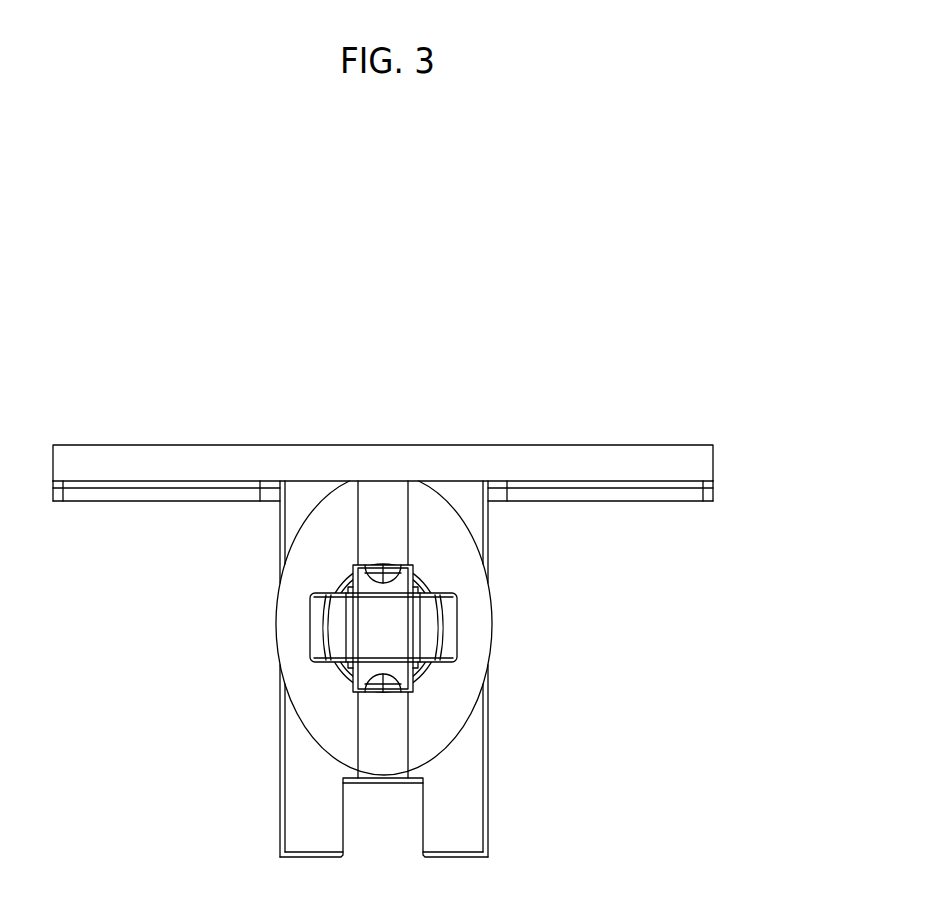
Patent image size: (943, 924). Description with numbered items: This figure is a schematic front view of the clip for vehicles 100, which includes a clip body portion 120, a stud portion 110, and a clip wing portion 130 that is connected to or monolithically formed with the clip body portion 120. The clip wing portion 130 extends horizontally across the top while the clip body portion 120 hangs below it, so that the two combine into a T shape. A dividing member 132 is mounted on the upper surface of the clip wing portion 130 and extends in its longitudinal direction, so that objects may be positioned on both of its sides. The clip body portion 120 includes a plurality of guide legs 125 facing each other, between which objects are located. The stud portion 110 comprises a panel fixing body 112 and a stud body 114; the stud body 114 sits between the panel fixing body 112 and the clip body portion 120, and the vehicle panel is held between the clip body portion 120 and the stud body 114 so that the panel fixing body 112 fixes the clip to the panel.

The clip for vehicles 100 is at (403, 338).
The stud portion 110 is at (464, 672).
The panel fixing body 112 is at (400, 621).
The stud body 114 is at (457, 555).
The clip body portion 120 is at (502, 760).
The guide leg 125 is at (468, 835).
The clip wing portion 130 is at (631, 496).
The dividing member 132 is at (561, 457).